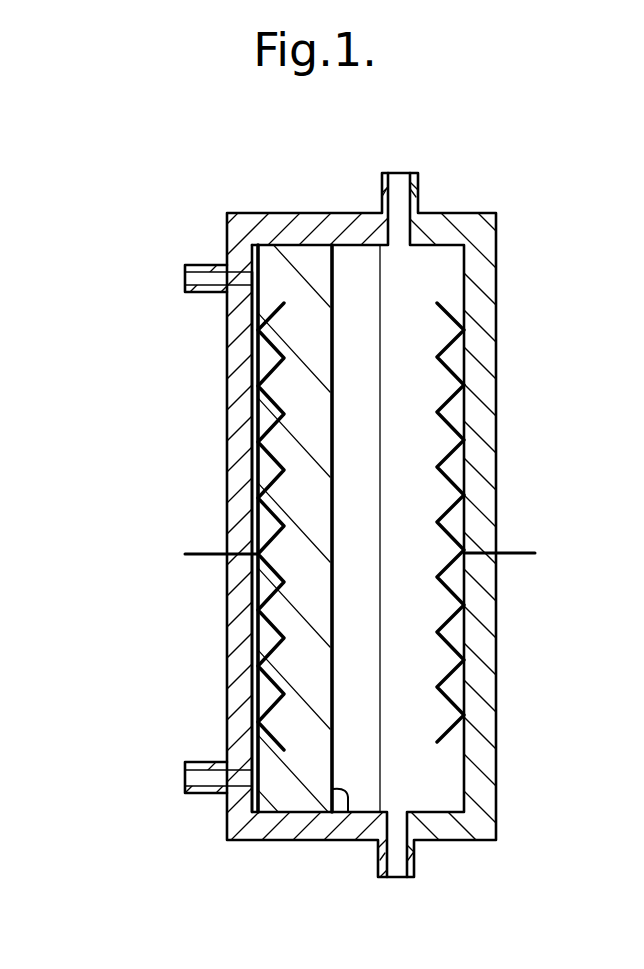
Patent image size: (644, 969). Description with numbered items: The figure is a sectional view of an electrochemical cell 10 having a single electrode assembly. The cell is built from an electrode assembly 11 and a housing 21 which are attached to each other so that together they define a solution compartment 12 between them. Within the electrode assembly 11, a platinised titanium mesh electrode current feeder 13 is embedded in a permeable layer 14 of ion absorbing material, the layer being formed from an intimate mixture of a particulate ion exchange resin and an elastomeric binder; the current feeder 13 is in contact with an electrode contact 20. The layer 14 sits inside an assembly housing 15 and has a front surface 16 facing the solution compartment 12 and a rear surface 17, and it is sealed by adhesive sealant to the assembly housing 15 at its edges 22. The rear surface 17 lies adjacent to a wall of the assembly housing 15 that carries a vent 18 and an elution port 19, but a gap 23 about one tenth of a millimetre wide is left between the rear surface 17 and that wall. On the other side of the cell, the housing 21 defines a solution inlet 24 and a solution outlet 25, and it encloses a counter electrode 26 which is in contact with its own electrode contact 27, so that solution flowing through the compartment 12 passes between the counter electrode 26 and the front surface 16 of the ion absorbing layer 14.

The electrochemical cell 10 is at (473, 190).
The electrode assembly 11 is at (251, 214).
The solution compartment 12 is at (447, 318).
The electrode current feeder 13 is at (257, 465).
The permeable layer of ion absorbing material 14 is at (280, 806).
The assembly housing 15 is at (249, 713).
The front surface 16 is at (333, 816).
The rear surface 17 is at (256, 631).
The vent 18 is at (195, 278).
The elution port 19 is at (197, 775).
The electrode contact 20 is at (205, 553).
The housing 21 is at (498, 236).
The edges 22 is at (332, 243).
The gap 23 is at (257, 352).
The solution inlet 24 is at (396, 863).
The solution outlet 25 is at (398, 190).
The counter electrode 26 is at (447, 630).
The electrode contact 27 is at (530, 553).